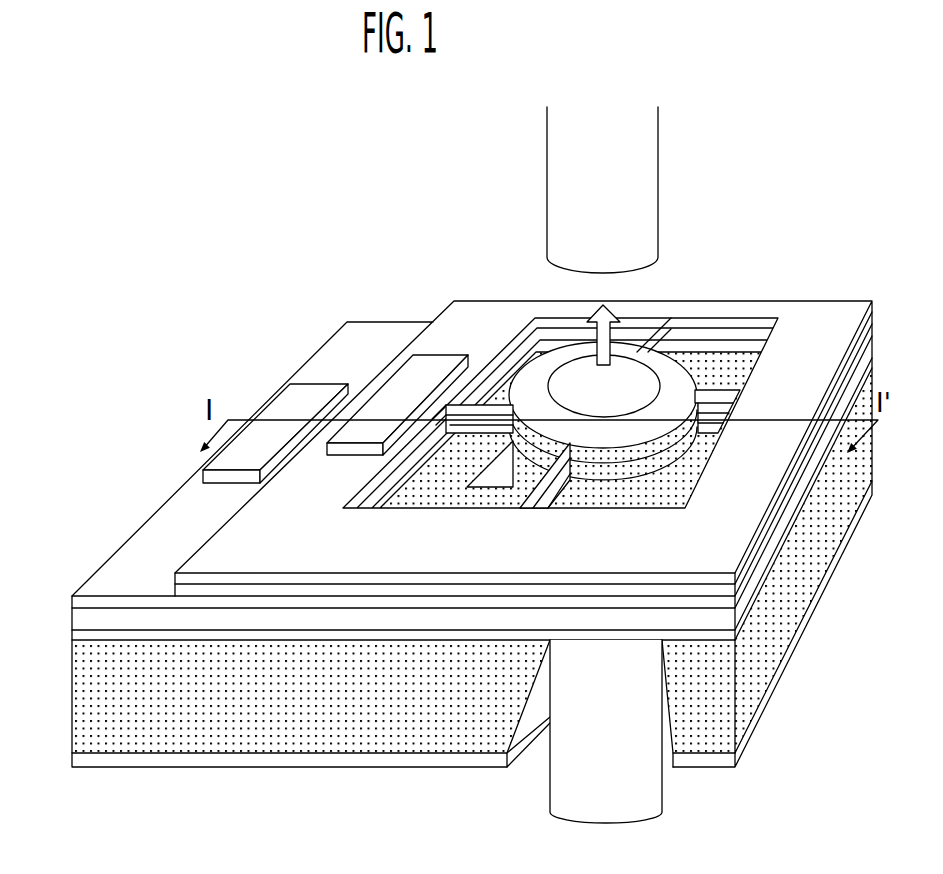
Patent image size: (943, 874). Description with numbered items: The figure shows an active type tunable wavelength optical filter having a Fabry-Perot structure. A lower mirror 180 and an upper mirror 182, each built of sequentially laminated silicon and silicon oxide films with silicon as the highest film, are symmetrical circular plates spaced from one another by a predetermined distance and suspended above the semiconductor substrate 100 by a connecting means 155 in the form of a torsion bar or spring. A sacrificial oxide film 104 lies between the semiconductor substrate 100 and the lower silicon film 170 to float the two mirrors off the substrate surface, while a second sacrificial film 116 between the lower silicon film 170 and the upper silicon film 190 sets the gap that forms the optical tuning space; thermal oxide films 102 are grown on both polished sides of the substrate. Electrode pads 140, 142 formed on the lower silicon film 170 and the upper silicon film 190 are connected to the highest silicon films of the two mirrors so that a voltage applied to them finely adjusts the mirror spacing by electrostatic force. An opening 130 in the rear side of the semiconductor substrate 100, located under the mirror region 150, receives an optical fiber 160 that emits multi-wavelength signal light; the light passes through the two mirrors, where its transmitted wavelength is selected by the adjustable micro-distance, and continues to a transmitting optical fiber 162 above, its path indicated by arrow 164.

The semiconductor substrate 100 is at (78, 704).
The thermal oxide film 102 is at (75, 638).
The sacrificial oxide film 104 is at (80, 620).
The second sacrificial film 116 is at (175, 593).
The opening 130 is at (541, 760).
The electrode pad 140 is at (223, 463).
The electrode pad 142 is at (393, 392).
The mirror region 150 is at (647, 380).
The connecting means 155 is at (723, 393).
The optical fiber 160 is at (652, 770).
The transmitting optical fiber 162 is at (543, 158).
The light path arrow 164 is at (623, 292).
The lower silicon film 170 is at (72, 601).
The lower mirror 180 is at (513, 443).
The upper mirror 182 is at (537, 398).
The upper silicon film 190 is at (175, 577).